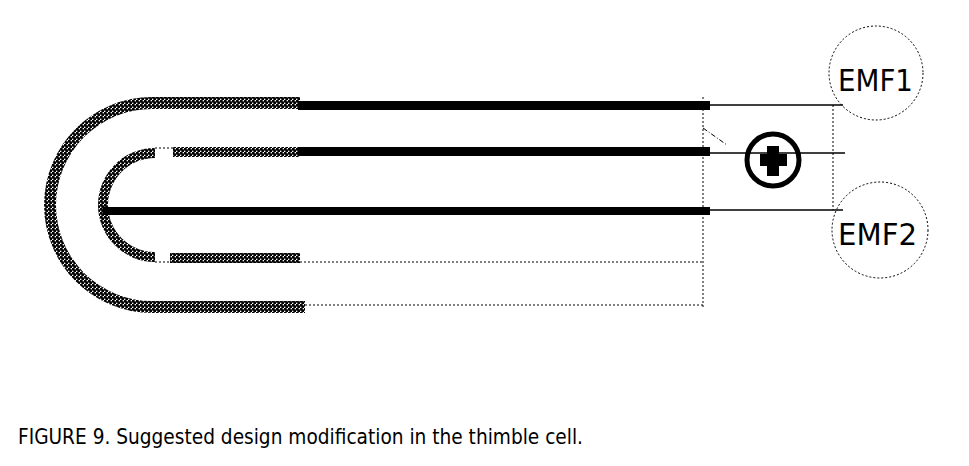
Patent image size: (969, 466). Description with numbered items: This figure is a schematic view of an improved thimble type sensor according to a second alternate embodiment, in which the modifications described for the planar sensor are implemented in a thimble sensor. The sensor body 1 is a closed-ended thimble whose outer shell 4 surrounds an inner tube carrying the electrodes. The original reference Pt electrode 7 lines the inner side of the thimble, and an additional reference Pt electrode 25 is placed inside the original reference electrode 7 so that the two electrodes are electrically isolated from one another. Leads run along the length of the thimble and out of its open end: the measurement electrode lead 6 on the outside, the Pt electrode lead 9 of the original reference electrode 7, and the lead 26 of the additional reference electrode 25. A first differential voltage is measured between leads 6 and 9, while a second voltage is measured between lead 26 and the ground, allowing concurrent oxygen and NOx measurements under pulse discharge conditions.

The thimble cell body 1 is at (687, 285).
The outer solid electrolyte shell 4 is at (58, 153).
The measurement electrode lead 6 is at (556, 98).
The reference Pt electrode 7 is at (263, 256).
The Pt electrode lead 9 is at (500, 153).
The additional reference Pt electrode 25 is at (406, 196).
The additional reference electrode lead 26 is at (741, 195).